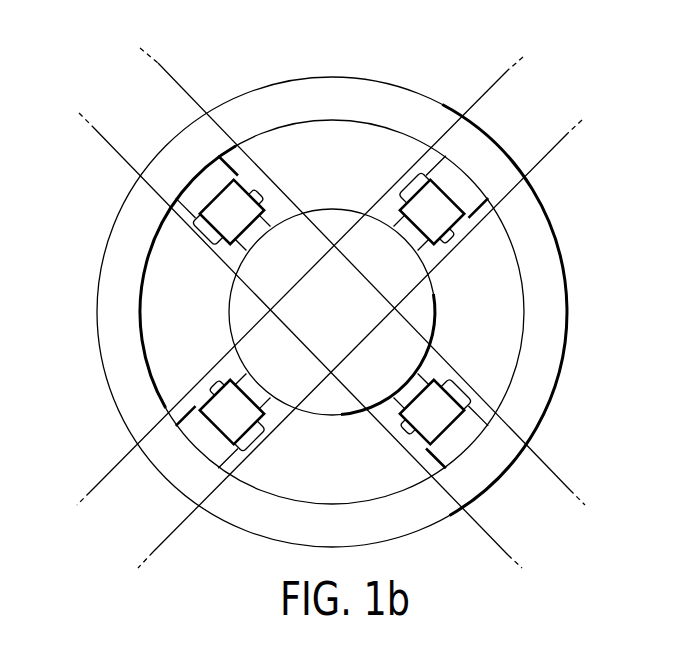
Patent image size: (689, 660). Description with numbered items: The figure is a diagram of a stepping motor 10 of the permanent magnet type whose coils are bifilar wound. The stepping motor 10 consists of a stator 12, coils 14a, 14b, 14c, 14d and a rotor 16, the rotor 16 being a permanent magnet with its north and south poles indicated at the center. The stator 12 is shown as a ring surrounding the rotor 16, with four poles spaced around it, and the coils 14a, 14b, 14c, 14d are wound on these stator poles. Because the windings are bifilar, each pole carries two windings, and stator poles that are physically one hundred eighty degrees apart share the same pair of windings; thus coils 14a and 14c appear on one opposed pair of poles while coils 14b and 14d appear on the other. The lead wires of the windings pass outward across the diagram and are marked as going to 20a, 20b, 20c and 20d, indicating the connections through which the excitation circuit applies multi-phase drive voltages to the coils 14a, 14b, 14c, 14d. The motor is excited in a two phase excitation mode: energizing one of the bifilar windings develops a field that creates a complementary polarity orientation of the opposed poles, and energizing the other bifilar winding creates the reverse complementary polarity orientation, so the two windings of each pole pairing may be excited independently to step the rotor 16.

The stepping motor 10 is at (576, 268).
The stator 12 is at (552, 403).
The coil 14a is at (243, 159).
The coil 14b is at (473, 226).
The coil 14c is at (211, 239).
The coil 14d is at (400, 186).
The rotor 16 is at (229, 316).
The terminal 20a is at (370, 279).
The terminal 20b is at (370, 345).
The terminal 20c is at (307, 343).
The terminal 20d is at (310, 282).